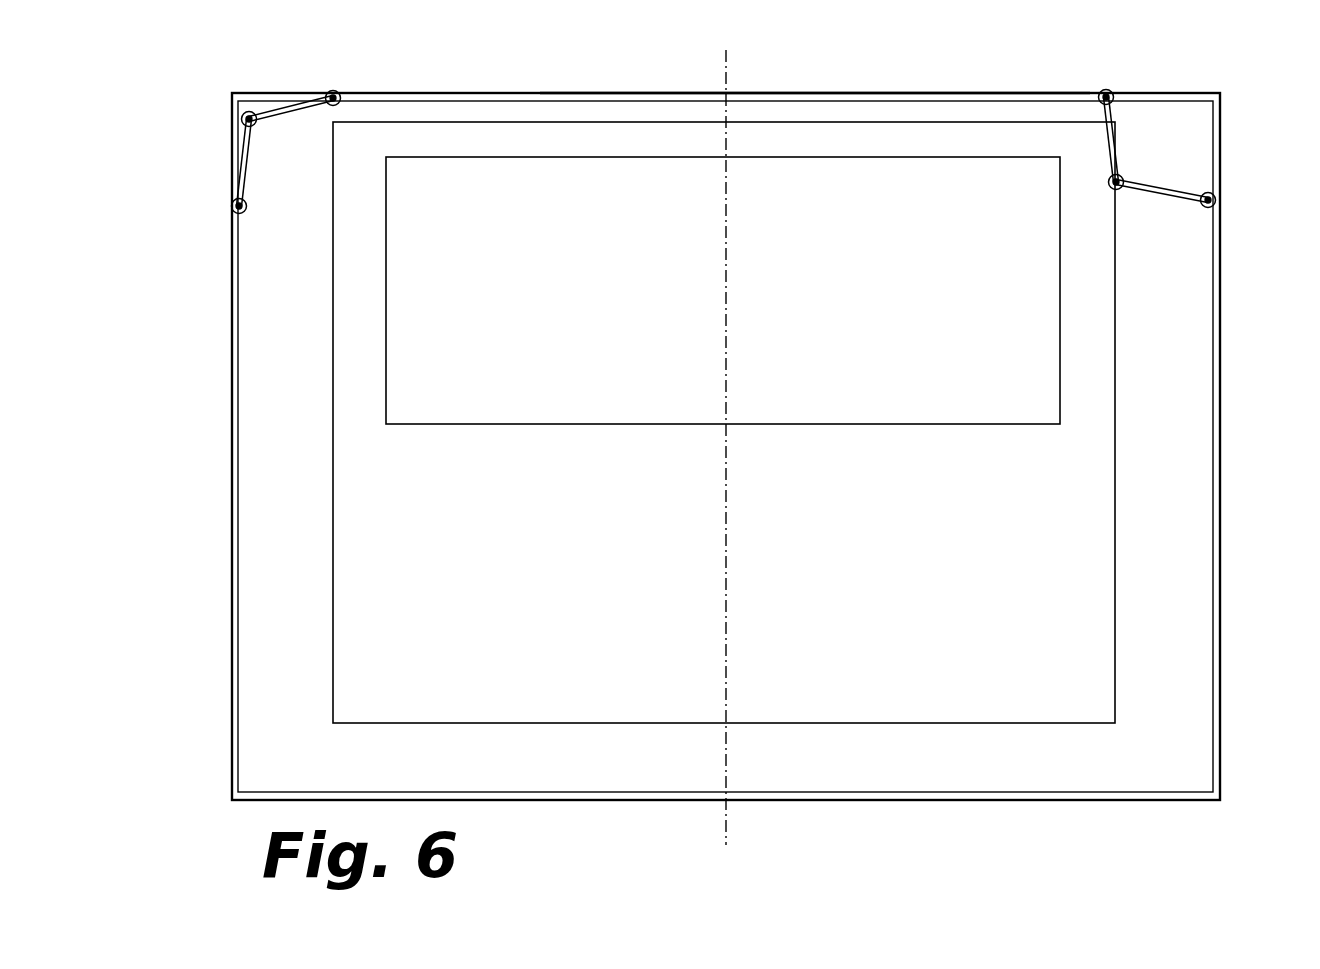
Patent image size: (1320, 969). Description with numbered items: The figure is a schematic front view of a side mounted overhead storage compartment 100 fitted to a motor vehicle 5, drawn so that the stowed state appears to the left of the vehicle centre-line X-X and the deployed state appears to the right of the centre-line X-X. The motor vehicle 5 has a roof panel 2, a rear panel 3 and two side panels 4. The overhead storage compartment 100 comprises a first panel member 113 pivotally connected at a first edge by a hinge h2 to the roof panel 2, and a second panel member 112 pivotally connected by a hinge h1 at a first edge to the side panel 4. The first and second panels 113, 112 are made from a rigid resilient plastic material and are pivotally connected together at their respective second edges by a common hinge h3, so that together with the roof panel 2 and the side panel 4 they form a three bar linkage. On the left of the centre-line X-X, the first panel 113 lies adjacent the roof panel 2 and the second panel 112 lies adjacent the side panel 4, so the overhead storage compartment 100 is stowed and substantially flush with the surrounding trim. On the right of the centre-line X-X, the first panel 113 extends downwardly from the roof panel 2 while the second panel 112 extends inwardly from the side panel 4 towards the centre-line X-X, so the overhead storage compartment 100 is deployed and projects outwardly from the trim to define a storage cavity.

The roof panel 2 is at (481, 93).
The motor vehicle 5 is at (592, 91).
The rear panel 3 is at (333, 602).
The side panel 4 is at (240, 752).
The overhead storage compartment 100 is at (724, 143).
The second panel member 112 is at (247, 167).
The first panel member 113 is at (300, 115).
The hinge h1 is at (233, 204).
The hinge h2 is at (333, 90).
The common hinge h3 is at (243, 116).
The vehicle centre-line X is at (725, 449).